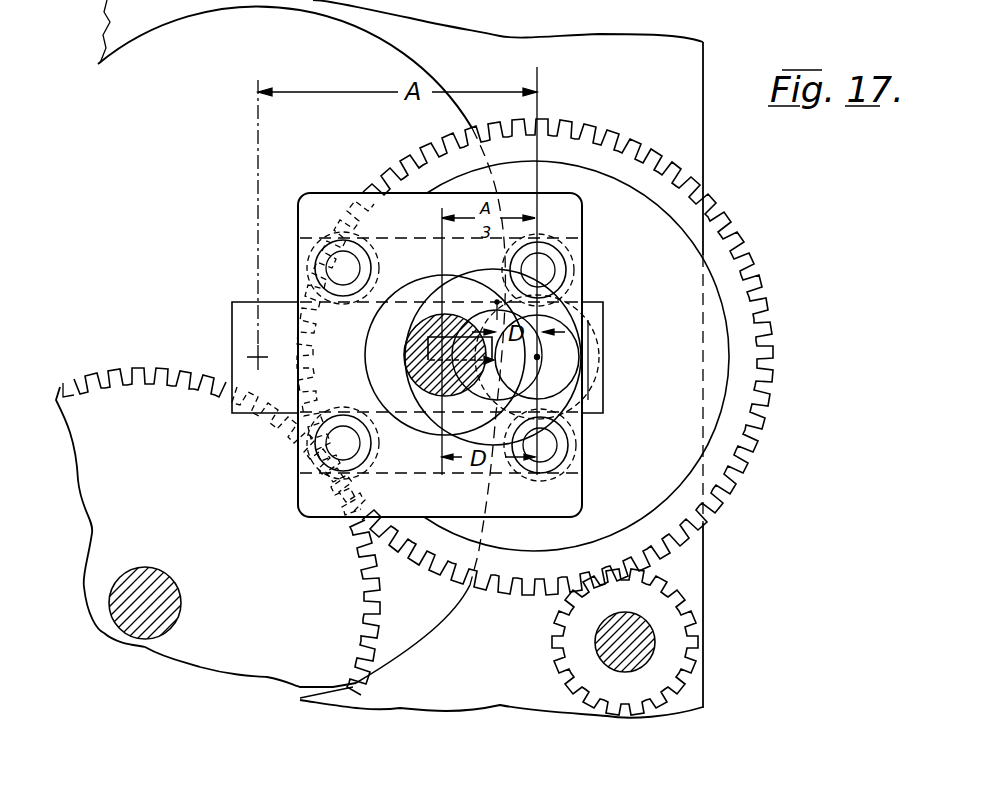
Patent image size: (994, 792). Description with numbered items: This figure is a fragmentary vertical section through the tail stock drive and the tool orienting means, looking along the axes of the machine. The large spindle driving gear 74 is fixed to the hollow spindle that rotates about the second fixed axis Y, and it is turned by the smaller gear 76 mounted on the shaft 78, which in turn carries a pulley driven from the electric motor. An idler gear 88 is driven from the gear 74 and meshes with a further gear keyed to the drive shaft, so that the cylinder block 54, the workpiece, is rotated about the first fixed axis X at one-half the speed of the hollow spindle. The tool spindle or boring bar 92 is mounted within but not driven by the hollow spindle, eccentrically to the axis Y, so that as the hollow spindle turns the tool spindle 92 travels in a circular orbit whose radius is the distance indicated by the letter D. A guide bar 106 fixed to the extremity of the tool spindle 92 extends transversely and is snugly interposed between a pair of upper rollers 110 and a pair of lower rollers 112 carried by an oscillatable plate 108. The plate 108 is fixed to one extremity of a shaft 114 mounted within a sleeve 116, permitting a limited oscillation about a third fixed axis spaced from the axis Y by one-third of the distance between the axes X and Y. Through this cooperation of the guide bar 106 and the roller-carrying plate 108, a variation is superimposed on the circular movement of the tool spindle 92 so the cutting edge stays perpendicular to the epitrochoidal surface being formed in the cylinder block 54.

The cylinder block 54 is at (678, 57).
The gear 74 is at (683, 207).
The gear 76 is at (652, 600).
The shaft 78 is at (637, 647).
The idler gear 88 is at (347, 630).
The tool spindle 92 is at (587, 392).
The guide bar 106 is at (243, 373).
The oscillatable plate 108 is at (325, 202).
The upper rollers 110 is at (300, 263).
The lower rollers 112 is at (297, 490).
The shaft 114 is at (393, 470).
The sleeve 116 is at (380, 368).
The first fixed axis X is at (257, 350).
The second fixed axis Y is at (552, 355).